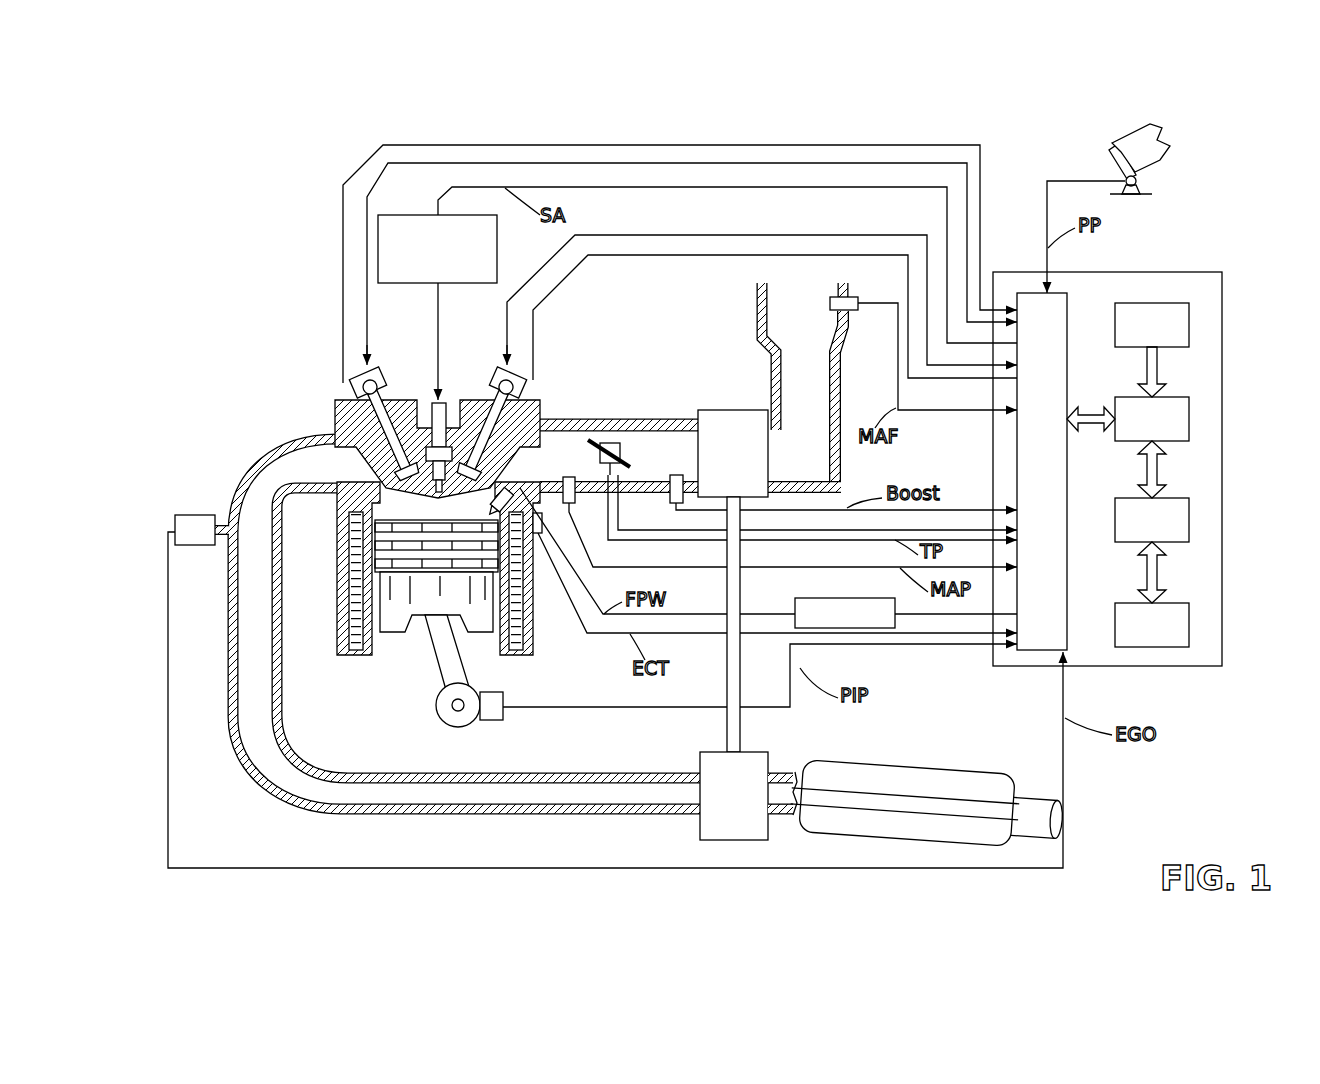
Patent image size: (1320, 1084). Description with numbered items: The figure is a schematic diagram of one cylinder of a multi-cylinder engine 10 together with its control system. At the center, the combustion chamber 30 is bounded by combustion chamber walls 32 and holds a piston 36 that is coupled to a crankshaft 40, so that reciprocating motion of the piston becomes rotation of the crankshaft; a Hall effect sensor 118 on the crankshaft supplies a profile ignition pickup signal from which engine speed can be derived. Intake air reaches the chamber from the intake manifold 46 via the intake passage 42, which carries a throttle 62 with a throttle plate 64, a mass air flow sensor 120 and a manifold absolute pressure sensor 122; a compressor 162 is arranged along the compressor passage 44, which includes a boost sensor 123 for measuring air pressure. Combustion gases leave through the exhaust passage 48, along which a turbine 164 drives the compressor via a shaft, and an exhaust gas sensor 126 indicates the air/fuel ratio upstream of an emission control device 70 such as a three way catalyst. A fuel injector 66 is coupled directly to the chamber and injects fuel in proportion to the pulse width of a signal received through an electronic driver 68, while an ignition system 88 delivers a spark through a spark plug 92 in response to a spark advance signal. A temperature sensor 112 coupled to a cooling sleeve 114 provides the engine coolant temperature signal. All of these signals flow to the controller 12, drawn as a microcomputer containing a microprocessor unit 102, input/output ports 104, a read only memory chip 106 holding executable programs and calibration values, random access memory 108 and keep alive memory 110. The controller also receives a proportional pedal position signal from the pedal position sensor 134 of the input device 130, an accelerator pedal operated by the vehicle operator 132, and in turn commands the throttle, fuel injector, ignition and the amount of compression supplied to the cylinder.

The engine 10 is at (381, 509).
The controller 12 is at (1152, 455).
The combustion chamber 30 is at (437, 503).
The combustion chamber walls 32 is at (380, 640).
The piston 36 is at (420, 600).
The crankshaft 40 is at (452, 726).
The intake passage 42 is at (814, 329).
The compressor passage 44 is at (674, 466).
The intake manifold 46 is at (574, 464).
The exhaust passage 48 is at (316, 474).
The throttle 62 is at (616, 444).
The throttle plate 64 is at (600, 440).
The fuel injector 66 is at (508, 485).
The electronic driver 68 is at (822, 600).
The emission control device 70 is at (978, 768).
The ignition system 88 is at (398, 214).
The spark plug 92 is at (434, 411).
The microprocessor unit 102 is at (1190, 418).
The input/output ports 104 is at (1068, 298).
The read only memory chip 106 is at (1190, 322).
The random access memory 108 is at (1190, 520).
The keep alive memory 110 is at (1190, 622).
The temperature sensor 112 is at (545, 537).
The cooling sleeve 114 is at (528, 598).
The Hall effect sensor 118 is at (495, 722).
The mass air flow sensor 120 is at (848, 297).
The manifold absolute pressure sensor 122 is at (572, 505).
The boost sensor 123 is at (670, 498).
The exhaust gas sensor 126 is at (175, 526).
The input device 130 is at (1112, 160).
The vehicle operator 132 is at (1165, 145).
The pedal position sensor 134 is at (1148, 185).
The compressor 162 is at (735, 408).
The turbine 164 is at (700, 830).